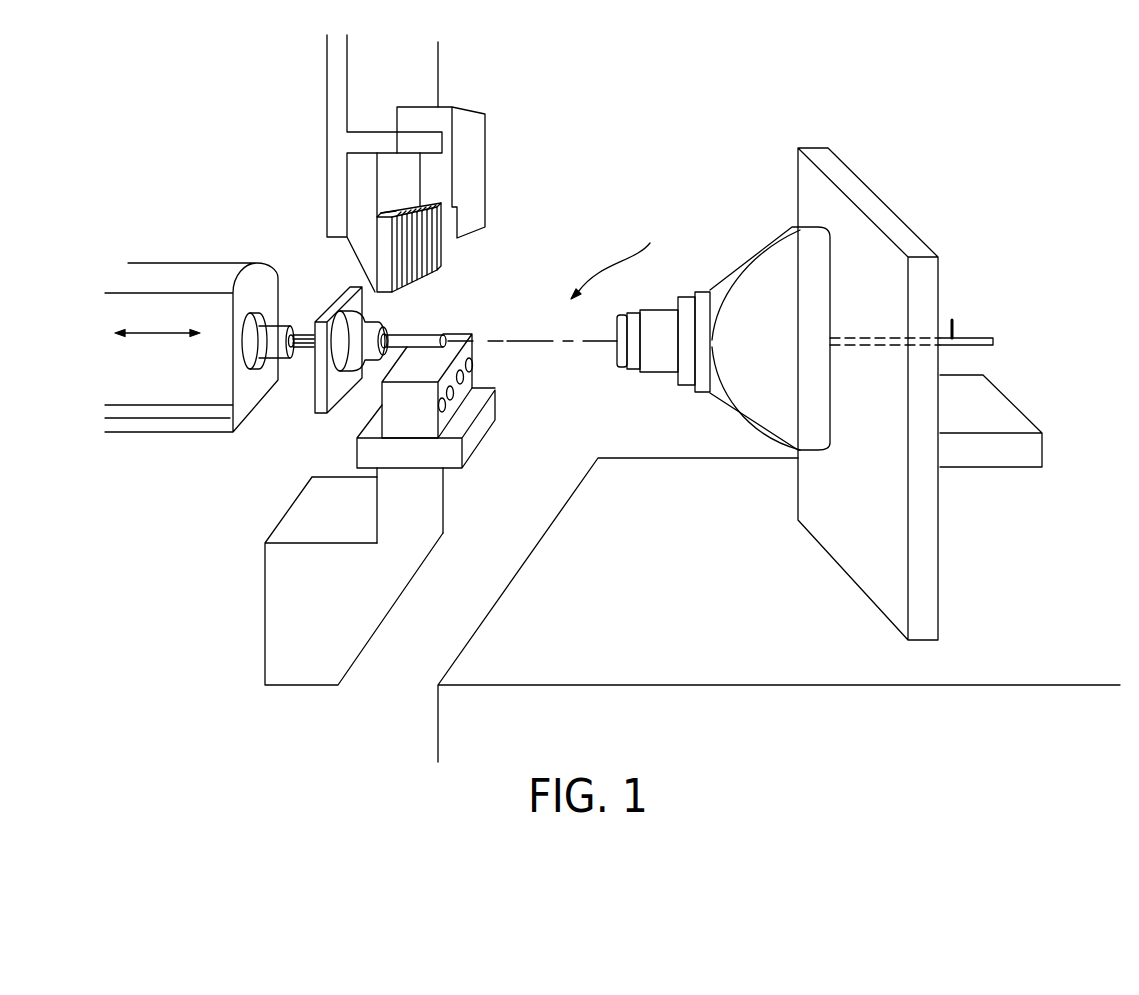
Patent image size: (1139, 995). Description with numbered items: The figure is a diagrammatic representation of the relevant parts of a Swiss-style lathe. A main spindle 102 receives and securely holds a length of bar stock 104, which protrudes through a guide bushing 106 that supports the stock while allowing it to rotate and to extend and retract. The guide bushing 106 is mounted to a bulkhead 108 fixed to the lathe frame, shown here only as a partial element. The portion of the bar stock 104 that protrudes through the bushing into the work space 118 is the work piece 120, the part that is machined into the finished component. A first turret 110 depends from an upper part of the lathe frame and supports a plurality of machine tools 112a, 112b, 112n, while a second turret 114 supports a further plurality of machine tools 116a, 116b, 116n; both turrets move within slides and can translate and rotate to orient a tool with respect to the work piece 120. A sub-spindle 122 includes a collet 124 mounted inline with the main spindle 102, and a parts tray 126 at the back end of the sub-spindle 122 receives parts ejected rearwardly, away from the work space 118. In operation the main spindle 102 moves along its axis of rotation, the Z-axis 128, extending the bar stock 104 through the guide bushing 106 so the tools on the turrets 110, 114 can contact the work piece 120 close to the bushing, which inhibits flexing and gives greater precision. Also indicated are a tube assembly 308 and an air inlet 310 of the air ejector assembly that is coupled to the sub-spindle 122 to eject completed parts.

The main spindle 102 is at (160, 257).
The bar stock 104 is at (302, 350).
The guide bushing 106 is at (358, 278).
The bulkhead 108 is at (322, 415).
The first turret 110 is at (327, 174).
The machine tool 112a is at (392, 293).
The machine tool 112b is at (400, 287).
The machine tool 112n is at (440, 243).
The second turret 114 is at (495, 428).
The machine tool 116a is at (472, 410).
The machine tool 116b is at (480, 437).
The machine tool 116n is at (473, 365).
The work space 118 is at (631, 261).
The work piece 120 is at (418, 330).
The sub-spindle 122 is at (743, 253).
The collet 124 is at (648, 310).
The parts tray 126 is at (963, 468).
The Z-axis 128 is at (553, 343).
The tube assembly 308 is at (990, 333).
The air inlet 310 is at (952, 320).